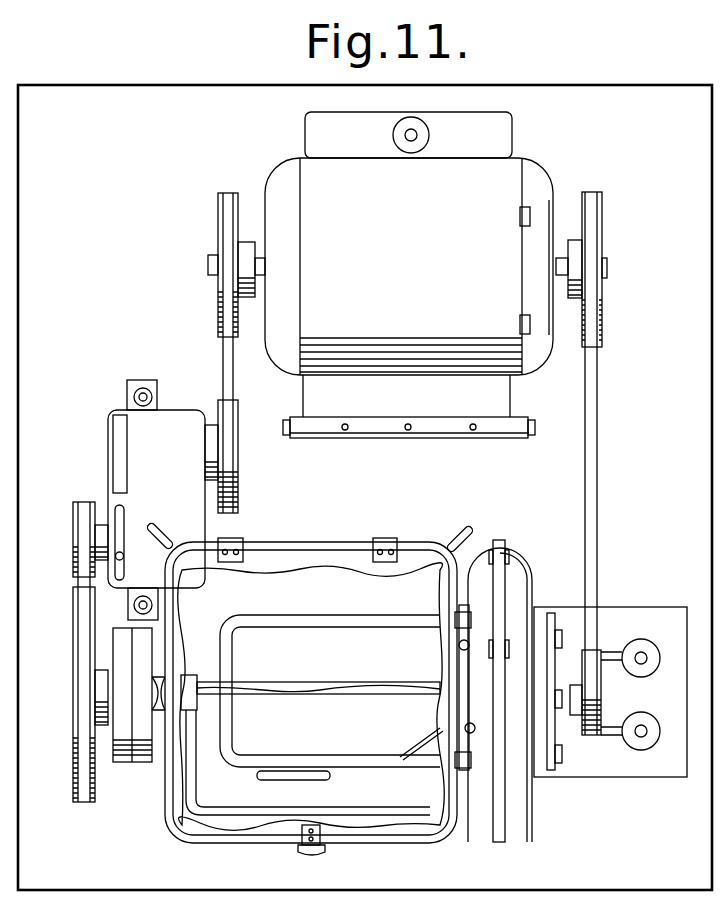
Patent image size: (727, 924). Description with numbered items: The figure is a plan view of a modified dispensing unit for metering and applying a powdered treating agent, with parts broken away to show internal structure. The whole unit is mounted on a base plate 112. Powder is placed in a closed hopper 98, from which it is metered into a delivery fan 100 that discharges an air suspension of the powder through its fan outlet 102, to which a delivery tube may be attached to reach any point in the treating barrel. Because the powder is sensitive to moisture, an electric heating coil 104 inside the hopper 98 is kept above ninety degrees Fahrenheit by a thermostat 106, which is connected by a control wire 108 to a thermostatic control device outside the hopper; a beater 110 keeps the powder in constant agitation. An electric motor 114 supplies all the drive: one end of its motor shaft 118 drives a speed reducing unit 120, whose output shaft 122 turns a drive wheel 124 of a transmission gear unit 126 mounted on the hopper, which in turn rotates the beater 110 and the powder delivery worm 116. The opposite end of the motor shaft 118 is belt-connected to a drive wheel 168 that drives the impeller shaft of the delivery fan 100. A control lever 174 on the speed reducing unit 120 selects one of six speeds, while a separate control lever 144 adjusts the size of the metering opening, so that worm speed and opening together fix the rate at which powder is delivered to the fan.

The hopper 98 is at (282, 556).
The delivery fan 100 is at (523, 583).
The fan outlet 102 is at (516, 842).
The electric heating coil 104 is at (230, 718).
The thermostat 106 is at (290, 781).
The control wire 108 is at (406, 747).
The beater 110 is at (205, 814).
The base plate 112 is at (80, 92).
The electric motor 114 is at (306, 170).
The powder delivery worm 116 is at (360, 688).
The motor shaft 118 is at (212, 263).
The speed reducing unit 120 is at (180, 420).
The output shaft 122 is at (73, 541).
The drive wheel 124 is at (73, 686).
The transmission gear unit 126 is at (128, 765).
The control lever 144 is at (459, 714).
The drive wheel 168 is at (602, 694).
The control lever 174 is at (160, 562).